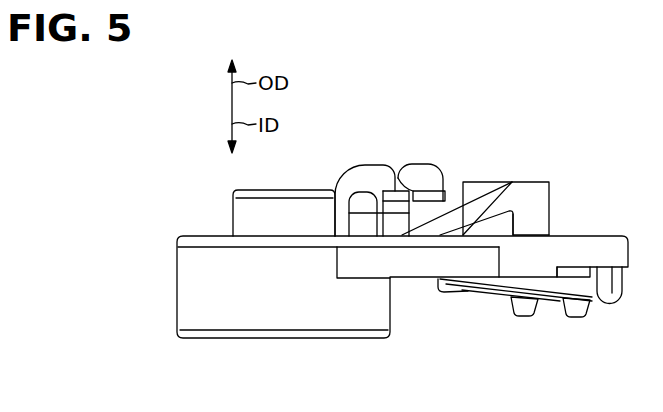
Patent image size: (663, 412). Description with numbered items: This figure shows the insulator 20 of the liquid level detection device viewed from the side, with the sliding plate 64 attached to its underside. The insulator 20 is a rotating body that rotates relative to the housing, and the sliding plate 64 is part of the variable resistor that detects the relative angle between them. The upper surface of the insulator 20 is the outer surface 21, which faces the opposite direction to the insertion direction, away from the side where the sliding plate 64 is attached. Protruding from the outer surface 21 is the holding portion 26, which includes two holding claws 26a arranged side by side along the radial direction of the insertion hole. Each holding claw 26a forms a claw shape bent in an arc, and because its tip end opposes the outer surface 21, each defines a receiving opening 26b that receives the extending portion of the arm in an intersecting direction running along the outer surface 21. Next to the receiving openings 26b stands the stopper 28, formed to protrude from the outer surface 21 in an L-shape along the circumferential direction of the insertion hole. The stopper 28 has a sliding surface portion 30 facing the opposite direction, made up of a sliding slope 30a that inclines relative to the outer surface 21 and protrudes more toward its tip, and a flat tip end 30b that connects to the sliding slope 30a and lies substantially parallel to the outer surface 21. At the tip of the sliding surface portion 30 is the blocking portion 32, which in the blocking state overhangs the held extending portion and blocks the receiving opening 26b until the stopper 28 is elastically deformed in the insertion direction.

The insulator 20 is at (212, 230).
The outer surface 21 is at (568, 235).
The holding portion 26 is at (393, 219).
The holding claws 26a is at (349, 168).
The receiving opening 26b is at (395, 229).
The stopper 28 is at (481, 129).
The sliding surface portion 30 is at (506, 152).
The sliding slope 30a is at (473, 198).
The flat tip end 30b is at (537, 172).
The blocking portion 32 is at (461, 191).
The sliding plate 64 is at (495, 296).